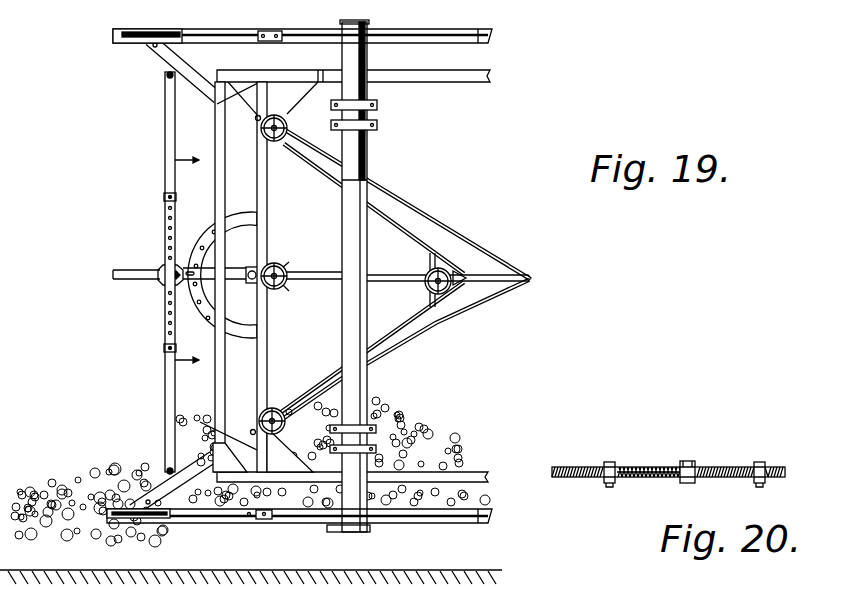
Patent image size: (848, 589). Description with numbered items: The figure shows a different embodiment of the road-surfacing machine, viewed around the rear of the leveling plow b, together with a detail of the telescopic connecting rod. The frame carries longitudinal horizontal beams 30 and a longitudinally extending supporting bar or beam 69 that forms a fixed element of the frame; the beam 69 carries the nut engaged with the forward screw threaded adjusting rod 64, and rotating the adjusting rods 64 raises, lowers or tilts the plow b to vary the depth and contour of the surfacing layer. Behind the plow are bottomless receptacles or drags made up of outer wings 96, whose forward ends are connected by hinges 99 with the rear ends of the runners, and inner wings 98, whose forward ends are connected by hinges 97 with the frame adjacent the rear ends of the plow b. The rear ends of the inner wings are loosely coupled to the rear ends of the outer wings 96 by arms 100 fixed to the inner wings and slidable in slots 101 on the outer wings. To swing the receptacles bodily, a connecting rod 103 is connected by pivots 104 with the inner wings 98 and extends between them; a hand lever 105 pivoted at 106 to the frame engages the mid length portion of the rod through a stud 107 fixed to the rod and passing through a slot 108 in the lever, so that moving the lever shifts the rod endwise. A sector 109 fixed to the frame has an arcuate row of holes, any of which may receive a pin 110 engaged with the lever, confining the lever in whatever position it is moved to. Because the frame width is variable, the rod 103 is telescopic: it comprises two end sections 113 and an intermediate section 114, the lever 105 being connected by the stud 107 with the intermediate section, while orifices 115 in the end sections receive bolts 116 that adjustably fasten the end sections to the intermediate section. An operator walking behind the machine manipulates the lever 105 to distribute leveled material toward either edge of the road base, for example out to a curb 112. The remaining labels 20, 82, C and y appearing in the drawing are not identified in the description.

In FIG. 19, the direction arrow 20 is at (188, 271).
In FIG. 19, the longitudinal horizontal beams 30 is at (428, 84).
In FIG. 19, the screw threaded adjusting rods 64 is at (279, 115).
In FIG. 19, the supporting bar or beam 69 is at (532, 275).
In FIG. 19, the wheel bracket 82 is at (284, 285).
In FIG. 19, the outer wings 96 is at (216, 33).
In FIG. 19, the hinges 97 is at (258, 125).
In FIG. 19, the inner wings 98 is at (207, 92).
In FIG. 19, the hinges 99 is at (265, 32).
In FIG. 19, the arms 100 is at (151, 31).
In FIG. 19, the slots 101 is at (130, 32).
In FIG. 19, the connecting rod 103 is at (165, 331).
In FIG. 19, the pivots 104 is at (167, 78).
In FIG. 19, the hand lever 105 is at (114, 277).
In FIG. 20, the hand lever 105 is at (702, 468).
In FIG. 19, the pivot 106 is at (258, 271).
In FIG. 19, the stud 107 is at (162, 268).
In FIG. 20, the stud 107 is at (690, 460).
In FIG. 19, the slot 108 is at (156, 271).
In FIG. 19, the sector 109 is at (244, 216).
In FIG. 19, the pin 110 is at (195, 264).
In FIG. 19, the curb 112 is at (373, 570).
In FIG. 19, the end sections 113 is at (165, 158).
In FIG. 20, the end sections 113 is at (567, 466).
In FIG. 19, the intermediate section 114 is at (164, 286).
In FIG. 20, the intermediate section 114 is at (668, 466).
In FIG. 20, the orifices 115 is at (618, 464).
In FIG. 19, the bolts 116 is at (164, 197).
In FIG. 20, the bolts 116 is at (607, 480).
In FIG. 19, the rail C is at (489, 36).
In FIG. 19, the post y is at (353, 257).
In FIG. 19, the leveling plow b is at (427, 328).